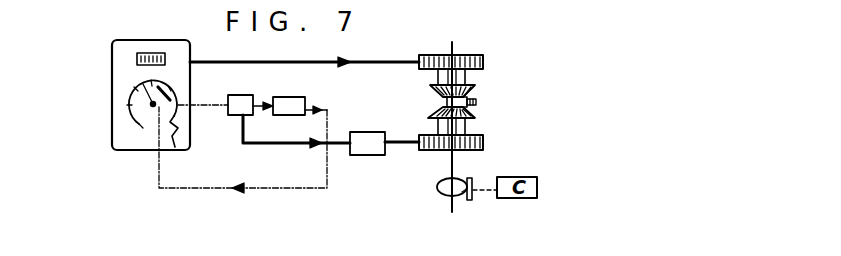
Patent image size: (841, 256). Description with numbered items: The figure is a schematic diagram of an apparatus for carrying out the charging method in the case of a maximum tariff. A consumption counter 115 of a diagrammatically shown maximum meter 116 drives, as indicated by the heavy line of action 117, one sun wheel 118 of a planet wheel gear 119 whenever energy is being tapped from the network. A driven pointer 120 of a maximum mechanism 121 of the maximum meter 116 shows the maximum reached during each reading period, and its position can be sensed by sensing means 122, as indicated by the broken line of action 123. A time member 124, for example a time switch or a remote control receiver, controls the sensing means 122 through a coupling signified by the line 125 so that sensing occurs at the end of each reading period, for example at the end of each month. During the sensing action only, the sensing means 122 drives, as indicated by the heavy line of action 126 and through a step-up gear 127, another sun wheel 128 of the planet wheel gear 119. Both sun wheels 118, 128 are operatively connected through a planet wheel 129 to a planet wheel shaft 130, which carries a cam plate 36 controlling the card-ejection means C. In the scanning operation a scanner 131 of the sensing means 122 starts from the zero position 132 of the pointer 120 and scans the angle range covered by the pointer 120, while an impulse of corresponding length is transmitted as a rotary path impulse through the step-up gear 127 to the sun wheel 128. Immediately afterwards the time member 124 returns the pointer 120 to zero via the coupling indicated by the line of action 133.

The cam plate 36 is at (437, 183).
The consumption counter 115 is at (152, 52).
The maximum meter 116 is at (98, 70).
The heavy line of action 117 is at (220, 62).
The sun wheel 118 is at (429, 93).
The planet wheel gear 119 is at (468, 127).
The driven pointer 120 is at (158, 87).
The maximum mechanism 121 is at (131, 108).
The sensing means 122 is at (247, 96).
The broken line of action 123 is at (203, 110).
The time member 124 is at (290, 97).
The line 125 is at (267, 114).
The heavy line of action 126 is at (255, 145).
The step-up gear 127 is at (378, 153).
The sun wheel 128 is at (427, 115).
The planet wheel 129 is at (474, 103).
The planet wheel shaft 130 is at (453, 167).
The scanner 131 is at (155, 104).
The zero position 132 is at (175, 147).
The line of action 133 is at (330, 112).